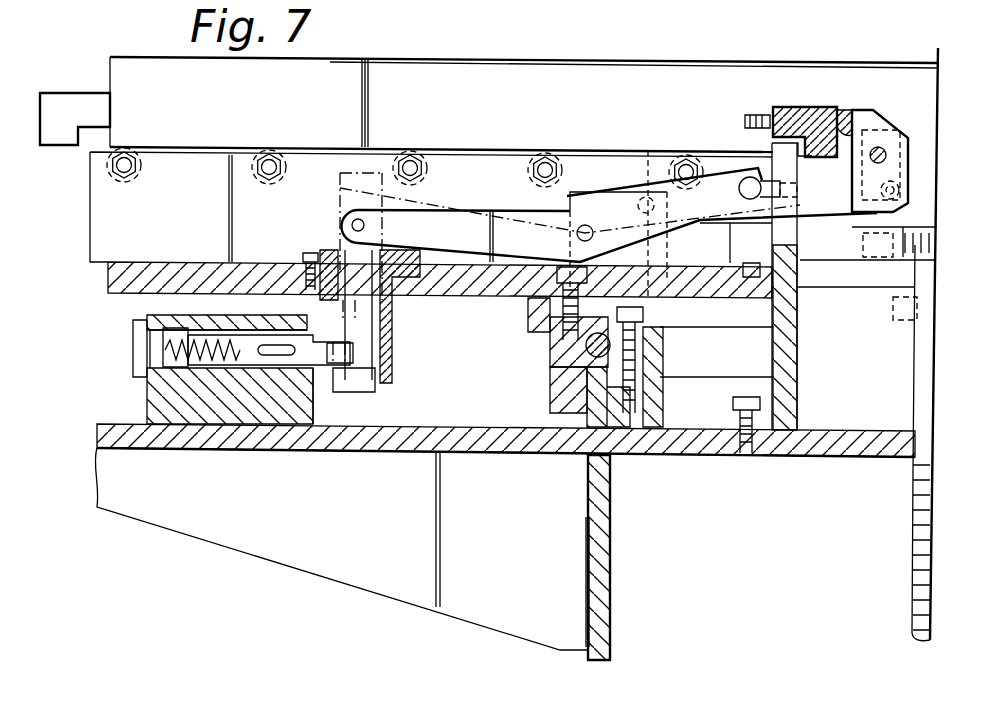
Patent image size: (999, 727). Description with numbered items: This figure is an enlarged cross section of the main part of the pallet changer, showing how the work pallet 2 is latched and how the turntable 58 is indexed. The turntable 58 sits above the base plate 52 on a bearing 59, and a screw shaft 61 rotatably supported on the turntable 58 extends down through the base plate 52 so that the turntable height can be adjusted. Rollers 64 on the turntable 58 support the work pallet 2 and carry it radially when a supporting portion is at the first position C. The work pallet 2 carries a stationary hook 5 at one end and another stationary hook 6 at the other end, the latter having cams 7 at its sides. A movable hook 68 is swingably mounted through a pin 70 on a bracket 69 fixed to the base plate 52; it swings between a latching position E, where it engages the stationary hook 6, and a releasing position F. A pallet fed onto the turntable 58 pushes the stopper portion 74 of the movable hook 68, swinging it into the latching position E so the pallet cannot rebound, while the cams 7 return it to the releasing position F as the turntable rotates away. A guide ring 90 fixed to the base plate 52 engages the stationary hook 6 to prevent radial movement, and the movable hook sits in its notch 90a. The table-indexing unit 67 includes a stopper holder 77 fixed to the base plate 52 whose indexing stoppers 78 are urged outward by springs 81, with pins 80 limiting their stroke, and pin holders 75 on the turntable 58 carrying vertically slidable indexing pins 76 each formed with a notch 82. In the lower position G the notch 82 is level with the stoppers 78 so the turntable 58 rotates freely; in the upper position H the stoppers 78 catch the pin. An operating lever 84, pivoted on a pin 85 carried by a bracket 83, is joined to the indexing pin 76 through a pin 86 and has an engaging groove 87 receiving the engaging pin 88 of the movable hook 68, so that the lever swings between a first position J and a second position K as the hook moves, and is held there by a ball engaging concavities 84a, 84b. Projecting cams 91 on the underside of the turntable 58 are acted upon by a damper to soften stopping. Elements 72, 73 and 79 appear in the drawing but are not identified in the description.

The work pallet 2 is at (484, 57).
The stationary hook 5 is at (72, 93).
The stationary hook 6 is at (817, 107).
The cams 7 is at (817, 103).
The base plate 52 is at (100, 432).
The turntable 58 is at (108, 243).
The bearing 59 is at (570, 455).
The screw shaft 61 is at (913, 547).
The rollers 64 is at (128, 152).
The table-indexing unit 67 is at (394, 343).
The movable hook 68 is at (886, 110).
The bracket 69 is at (905, 218).
The pin 70 is at (885, 152).
The clamp surface 72 is at (905, 180).
The pin 73 is at (905, 196).
The stopper portion 74 is at (844, 118).
The pin holders 75 is at (396, 318).
The indexing pins 76 is at (372, 385).
The stopper holder 77 is at (213, 395).
The indexing stoppers 78 is at (304, 366).
The slide rod 79 is at (292, 358).
The pins 80 is at (268, 355).
The springs 81 is at (142, 380).
The notch 82 is at (336, 420).
The brackets 83 is at (667, 243).
The operating lever 84 is at (503, 213).
The concavity 84a is at (648, 197).
The concavity 84b is at (645, 262).
The pins 85 is at (587, 225).
The pin 86 is at (355, 222).
The engaging groove 87 is at (748, 180).
The engaging pin 88 is at (747, 250).
The guide ring 90 is at (771, 145).
The notch 90a is at (794, 245).
The projecting cams 91 is at (557, 394).
The first position C is at (66, 210).
The latching position E is at (862, 105).
The releasing position F is at (840, 228).
The lower position G is at (369, 397).
The upper position H is at (370, 363).
The first position J is at (474, 205).
The second position K is at (554, 227).